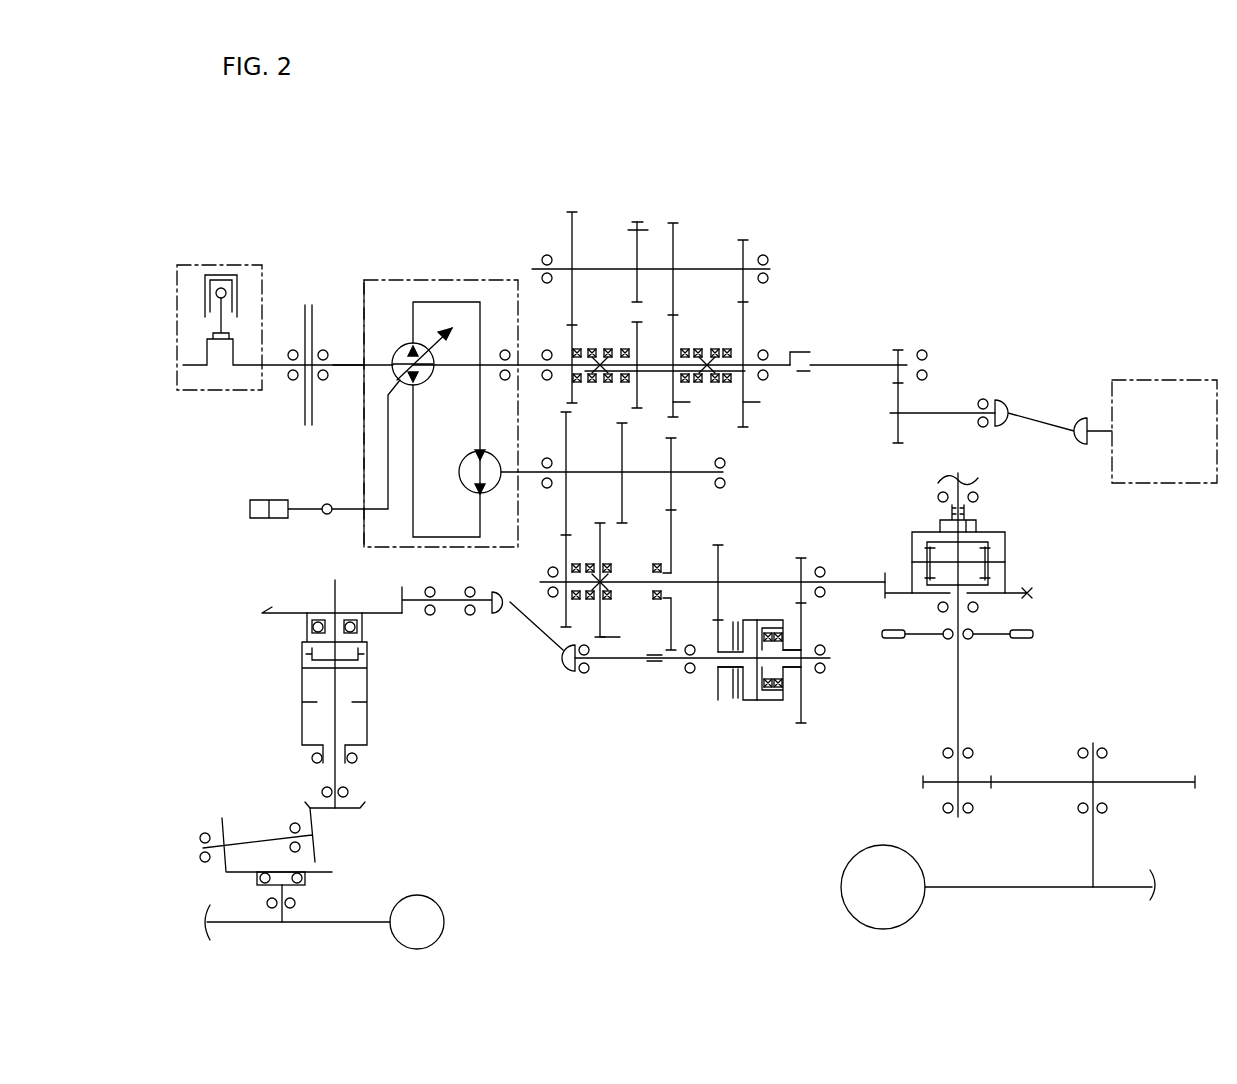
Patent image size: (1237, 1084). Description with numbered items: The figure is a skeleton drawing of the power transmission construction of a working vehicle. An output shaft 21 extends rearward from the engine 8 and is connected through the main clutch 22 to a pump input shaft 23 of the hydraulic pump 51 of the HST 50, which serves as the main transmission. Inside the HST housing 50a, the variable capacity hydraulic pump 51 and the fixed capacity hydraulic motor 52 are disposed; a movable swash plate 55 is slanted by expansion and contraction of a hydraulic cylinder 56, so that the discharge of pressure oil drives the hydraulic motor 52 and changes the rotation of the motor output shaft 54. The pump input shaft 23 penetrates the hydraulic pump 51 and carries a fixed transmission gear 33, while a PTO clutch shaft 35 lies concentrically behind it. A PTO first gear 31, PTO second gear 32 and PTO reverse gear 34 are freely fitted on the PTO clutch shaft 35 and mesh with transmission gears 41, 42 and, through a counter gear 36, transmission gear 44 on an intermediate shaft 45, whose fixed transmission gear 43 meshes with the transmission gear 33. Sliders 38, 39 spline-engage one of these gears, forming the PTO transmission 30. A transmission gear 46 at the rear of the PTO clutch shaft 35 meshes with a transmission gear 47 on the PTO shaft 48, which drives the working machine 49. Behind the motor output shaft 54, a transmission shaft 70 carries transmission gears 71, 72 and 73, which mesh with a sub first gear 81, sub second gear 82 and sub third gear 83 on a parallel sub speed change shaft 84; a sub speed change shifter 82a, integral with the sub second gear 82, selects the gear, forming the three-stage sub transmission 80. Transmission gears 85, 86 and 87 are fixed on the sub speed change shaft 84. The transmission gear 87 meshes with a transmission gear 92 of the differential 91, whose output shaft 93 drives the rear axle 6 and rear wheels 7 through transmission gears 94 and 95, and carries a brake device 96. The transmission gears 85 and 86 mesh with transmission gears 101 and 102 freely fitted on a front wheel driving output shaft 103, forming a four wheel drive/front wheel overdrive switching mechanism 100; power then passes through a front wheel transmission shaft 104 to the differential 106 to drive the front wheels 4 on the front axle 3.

The front axle 3 is at (285, 913).
The front wheels 4 is at (412, 895).
The rear axle 6 is at (1090, 855).
The rear wheels 7 is at (841, 880).
The engine 8 is at (231, 265).
The output shaft 21 is at (282, 377).
The main clutch 22 is at (305, 303).
The pump input shaft 23 is at (352, 377).
The PTO transmission 30 is at (757, 337).
The PTO first gear 31 is at (756, 405).
The PTO second gear 32 is at (682, 402).
The transmission gear 33 is at (567, 325).
The PTO reverse gear 34 is at (635, 402).
The PTO clutch shaft 35 is at (803, 352).
The counter gear 36 is at (637, 221).
The slider 38 is at (706, 345).
The slider 39 is at (600, 345).
The transmission gear 41 is at (743, 239).
The transmission gear 42 is at (673, 222).
The transmission gear 43 is at (572, 211).
The transmission gear 44 is at (637, 250).
The intermediate shaft 45 is at (770, 265).
The transmission gear 46 is at (898, 349).
The transmission gear 47 is at (892, 436).
The PTO shaft 48 is at (950, 412).
The working machine 49 is at (1165, 484).
The HST 50 is at (388, 268).
The HST housing 50a is at (362, 462).
The hydraulic pump 51 is at (398, 342).
The hydraulic motor 52 is at (462, 462).
The motor output shaft 54 is at (505, 482).
The movable swash plate 55 is at (432, 330).
The hydraulic cylinder 56 is at (250, 509).
The transmission shaft 70 is at (728, 467).
The transmission gear 71 is at (674, 442).
The transmission gear 72 is at (621, 435).
The transmission gear 73 is at (565, 423).
The sub transmission 80 is at (676, 555).
The sub first gear 81 is at (662, 545).
The sub second gear 82 is at (556, 652).
The sub speed change shifter 82a is at (615, 605).
The sub third gear 83 is at (563, 548).
The sub speed change shaft 84 is at (846, 575).
The transmission gear 85 is at (801, 557).
The transmission gear 86 is at (720, 544).
The transmission gear 87 is at (884, 572).
The differential 91 is at (1022, 545).
The transmission gear 92 is at (1032, 593).
The output shaft 93 is at (957, 692).
The transmission gear 94 is at (922, 780).
The transmission gear 95 is at (1135, 781).
The brake device 96 is at (993, 650).
The four wheel drive/front wheel overdrive switching mechanism 100 is at (755, 722).
The transmission gear 101 is at (803, 633).
The transmission gear 102 is at (715, 685).
The front wheel driving output shaft 103 is at (810, 675).
The front wheel transmission shaft 104 is at (618, 665).
The differential 106 is at (387, 725).